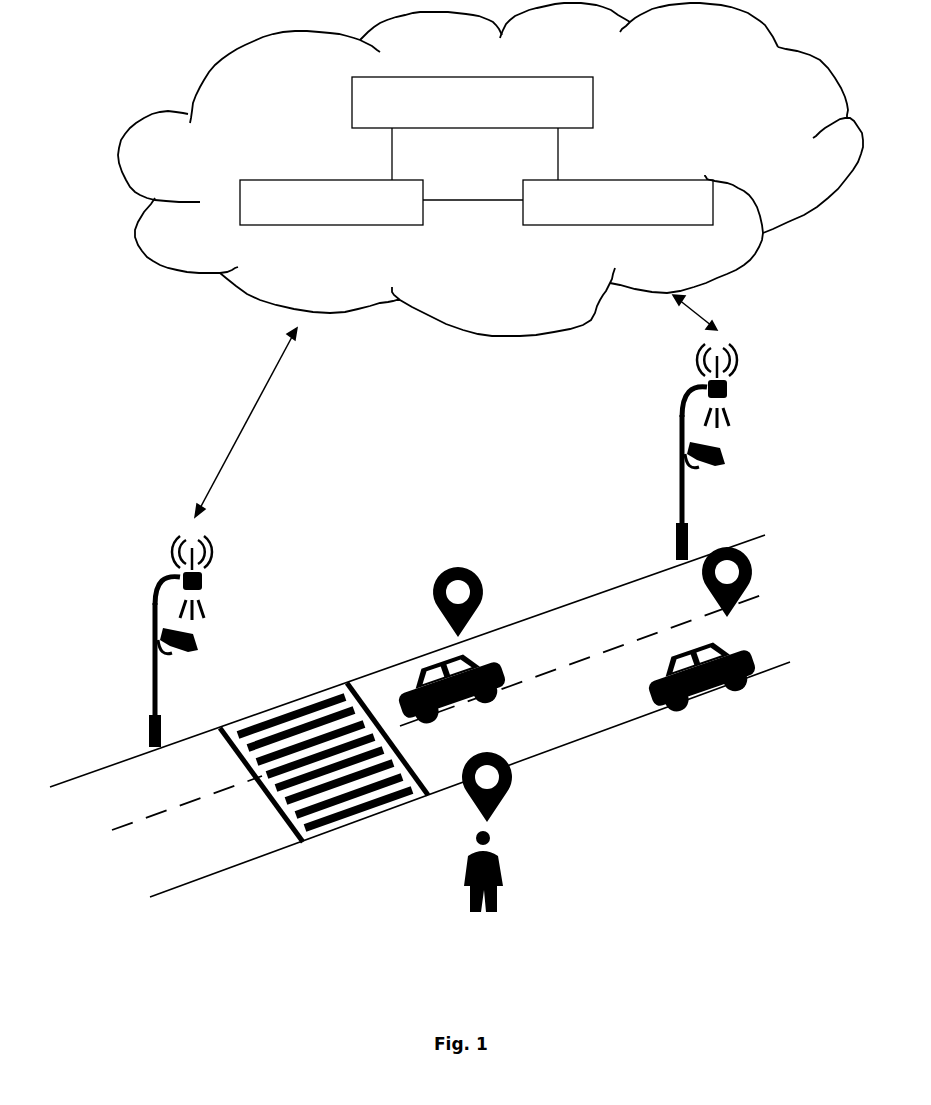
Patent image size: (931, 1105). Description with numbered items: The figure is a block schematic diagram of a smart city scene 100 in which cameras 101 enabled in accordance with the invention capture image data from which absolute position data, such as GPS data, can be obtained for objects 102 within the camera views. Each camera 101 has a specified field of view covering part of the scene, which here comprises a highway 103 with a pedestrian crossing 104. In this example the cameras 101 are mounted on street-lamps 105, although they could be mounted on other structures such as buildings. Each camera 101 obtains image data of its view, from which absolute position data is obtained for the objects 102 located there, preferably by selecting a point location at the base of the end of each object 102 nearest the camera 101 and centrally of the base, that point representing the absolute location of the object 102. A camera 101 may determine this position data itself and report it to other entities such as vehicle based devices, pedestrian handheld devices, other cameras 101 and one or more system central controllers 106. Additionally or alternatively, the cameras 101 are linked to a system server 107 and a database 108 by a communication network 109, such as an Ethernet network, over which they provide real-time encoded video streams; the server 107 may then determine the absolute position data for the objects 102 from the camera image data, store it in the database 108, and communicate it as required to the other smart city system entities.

The smart city scene 100 is at (165, 447).
The camera 101 is at (197, 641).
The object 102 is at (648, 671).
The highway 103 is at (215, 855).
The pedestrian crossing 104 is at (333, 795).
The street-lamp 105 is at (155, 599).
The system central controller 106 is at (492, 115).
The system server 107 is at (353, 215).
The database 108 is at (637, 215).
The communication network 109 is at (292, 93).